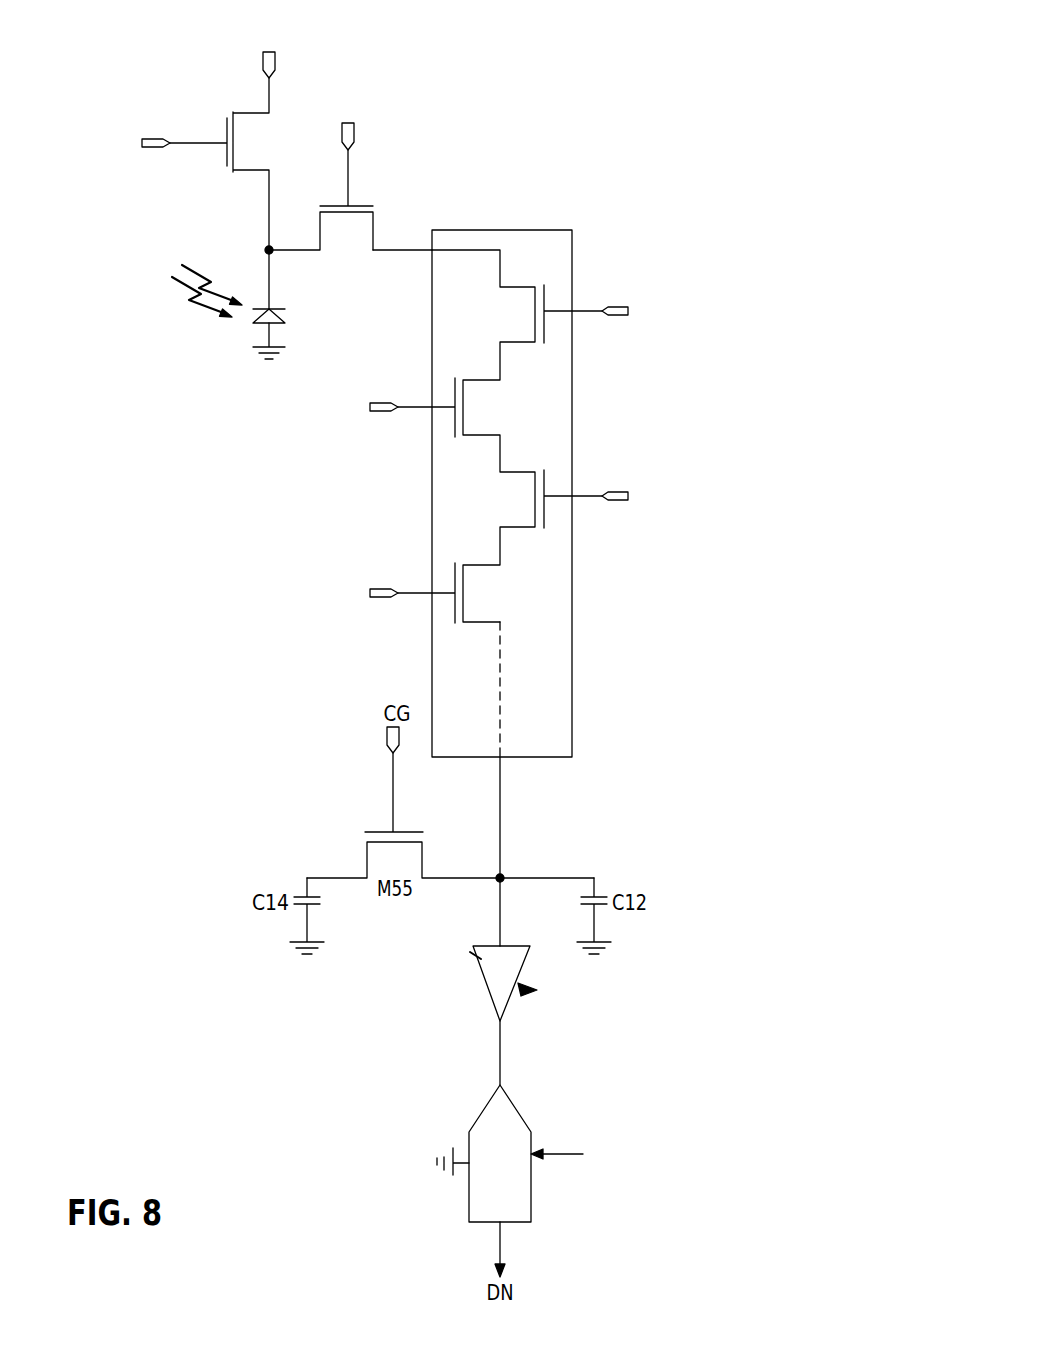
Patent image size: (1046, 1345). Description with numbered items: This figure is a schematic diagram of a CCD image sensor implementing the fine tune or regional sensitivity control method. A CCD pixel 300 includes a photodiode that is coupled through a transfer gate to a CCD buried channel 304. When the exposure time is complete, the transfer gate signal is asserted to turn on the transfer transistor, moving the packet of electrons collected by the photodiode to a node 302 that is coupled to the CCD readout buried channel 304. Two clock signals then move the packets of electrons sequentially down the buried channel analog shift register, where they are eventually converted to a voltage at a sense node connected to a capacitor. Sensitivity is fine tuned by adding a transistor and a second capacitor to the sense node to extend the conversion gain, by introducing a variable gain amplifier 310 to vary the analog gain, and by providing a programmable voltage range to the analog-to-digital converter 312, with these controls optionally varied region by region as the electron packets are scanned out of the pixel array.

The CCD pixel 300 is at (622, 64).
The node 302 is at (397, 248).
The CCD buried channel 304 is at (573, 246).
The variable gain amplifier (VGA) 310 is at (490, 1004).
The ADC 312 is at (532, 1206).